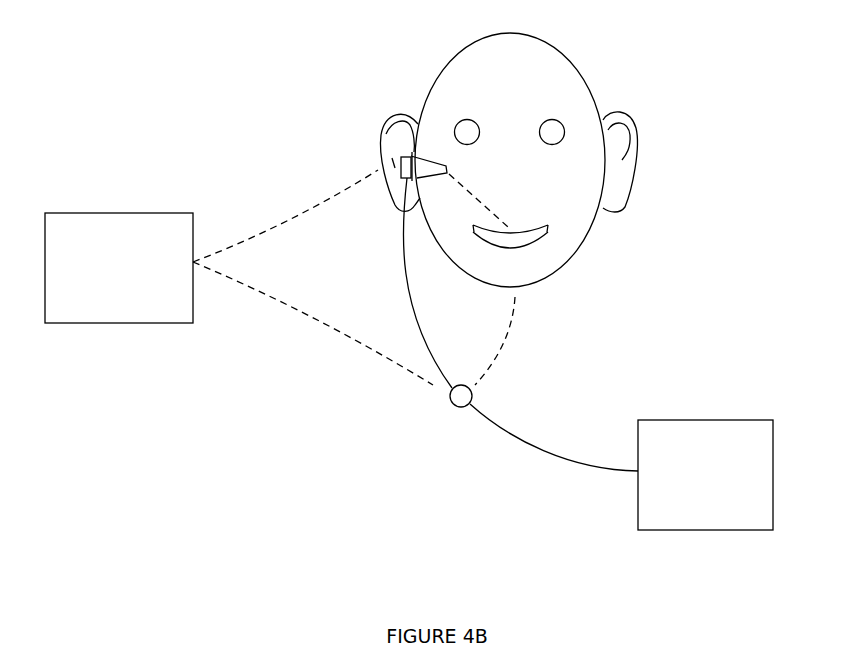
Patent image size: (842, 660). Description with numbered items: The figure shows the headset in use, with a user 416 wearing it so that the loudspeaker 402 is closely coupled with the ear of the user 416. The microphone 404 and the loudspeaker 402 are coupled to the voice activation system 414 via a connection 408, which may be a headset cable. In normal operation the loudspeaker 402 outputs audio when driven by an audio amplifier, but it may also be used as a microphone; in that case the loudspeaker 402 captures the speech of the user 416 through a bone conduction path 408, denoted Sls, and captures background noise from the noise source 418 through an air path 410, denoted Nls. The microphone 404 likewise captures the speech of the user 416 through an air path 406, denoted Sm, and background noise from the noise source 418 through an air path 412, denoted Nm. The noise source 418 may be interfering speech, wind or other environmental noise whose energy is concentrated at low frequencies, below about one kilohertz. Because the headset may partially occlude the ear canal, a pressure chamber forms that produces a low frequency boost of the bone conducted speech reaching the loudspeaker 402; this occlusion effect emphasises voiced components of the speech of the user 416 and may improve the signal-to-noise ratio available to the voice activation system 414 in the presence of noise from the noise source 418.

The loudspeaker 402 is at (393, 157).
The microphone 404 is at (453, 407).
The air path 406 is at (512, 328).
The connection 408 is at (500, 203).
The air path 410 is at (308, 213).
The air path 412 is at (327, 320).
The voice activation system 414 is at (712, 420).
The user 416 is at (580, 75).
The noise source 418 is at (116, 212).